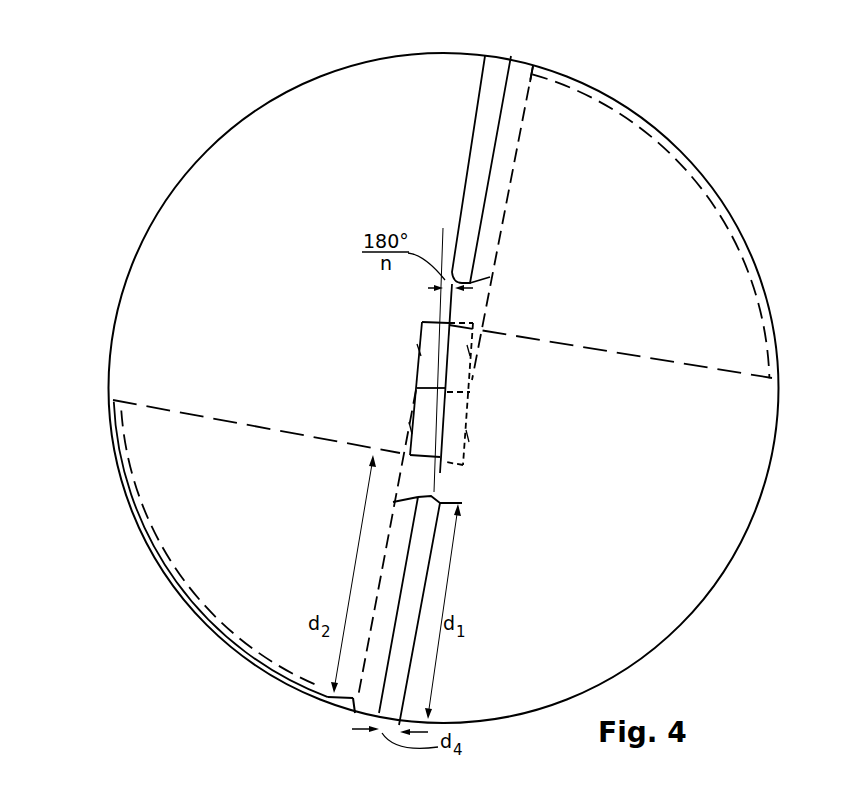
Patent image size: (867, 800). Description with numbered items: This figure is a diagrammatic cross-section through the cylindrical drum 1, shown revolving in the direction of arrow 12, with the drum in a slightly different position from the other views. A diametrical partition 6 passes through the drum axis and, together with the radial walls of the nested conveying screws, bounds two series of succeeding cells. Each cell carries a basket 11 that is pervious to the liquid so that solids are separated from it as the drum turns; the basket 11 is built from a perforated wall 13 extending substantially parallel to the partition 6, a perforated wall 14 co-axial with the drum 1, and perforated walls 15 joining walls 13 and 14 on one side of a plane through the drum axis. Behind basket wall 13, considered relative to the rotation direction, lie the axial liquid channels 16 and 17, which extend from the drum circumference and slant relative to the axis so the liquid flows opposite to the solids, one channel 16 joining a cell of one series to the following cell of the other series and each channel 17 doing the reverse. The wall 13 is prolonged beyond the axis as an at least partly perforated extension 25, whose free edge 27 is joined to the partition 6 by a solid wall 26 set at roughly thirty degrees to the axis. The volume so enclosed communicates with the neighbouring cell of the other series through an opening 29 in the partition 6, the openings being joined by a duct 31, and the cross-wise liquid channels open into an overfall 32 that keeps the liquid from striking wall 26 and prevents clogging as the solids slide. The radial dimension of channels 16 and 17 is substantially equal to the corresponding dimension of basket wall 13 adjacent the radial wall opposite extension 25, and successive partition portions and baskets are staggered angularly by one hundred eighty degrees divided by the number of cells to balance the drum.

The cylindrical drum 1 is at (296, 86).
The partition 6 is at (434, 492).
The basket 11 is at (636, 116).
The arrow 12 is at (480, 37).
The perforated wall 13 is at (500, 232).
The perforated wall 14 is at (735, 234).
The perforated walls 15 is at (637, 252).
The axial channel 16 is at (377, 710).
The axial channel 17 is at (496, 73).
The extension 25 is at (419, 378).
The solid wall 26 is at (446, 322).
The free edge 27 is at (422, 322).
The opening 29 is at (420, 350).
The duct 31 is at (427, 367).
The overfall 32 is at (423, 425).